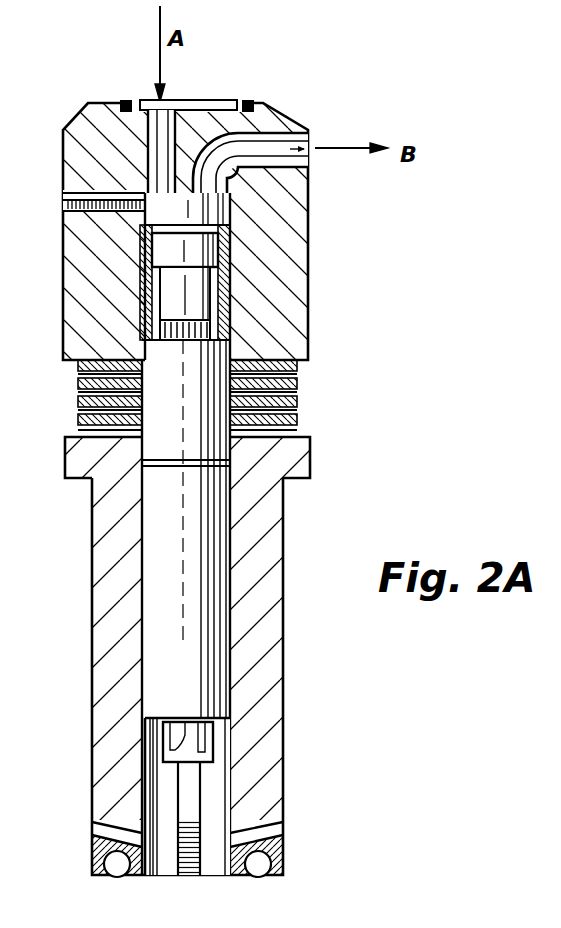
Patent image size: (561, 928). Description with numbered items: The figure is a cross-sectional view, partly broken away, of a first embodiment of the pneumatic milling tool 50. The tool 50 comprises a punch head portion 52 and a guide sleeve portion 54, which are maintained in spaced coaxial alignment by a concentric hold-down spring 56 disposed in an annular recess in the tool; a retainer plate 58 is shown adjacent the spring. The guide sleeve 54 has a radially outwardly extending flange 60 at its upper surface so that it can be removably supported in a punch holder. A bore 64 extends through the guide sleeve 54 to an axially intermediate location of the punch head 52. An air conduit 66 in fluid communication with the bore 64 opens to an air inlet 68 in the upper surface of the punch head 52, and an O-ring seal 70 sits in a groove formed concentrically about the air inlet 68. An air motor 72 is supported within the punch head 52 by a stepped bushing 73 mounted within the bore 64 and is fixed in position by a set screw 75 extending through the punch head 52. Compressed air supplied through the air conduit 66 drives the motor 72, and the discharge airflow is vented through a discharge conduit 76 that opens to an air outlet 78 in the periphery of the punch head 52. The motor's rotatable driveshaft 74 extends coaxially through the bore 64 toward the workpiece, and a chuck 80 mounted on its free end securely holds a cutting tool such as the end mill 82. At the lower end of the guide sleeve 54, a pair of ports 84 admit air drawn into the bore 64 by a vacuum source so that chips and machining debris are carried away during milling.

The pneumatic milling tool 50 is at (440, 158).
The punch head portion 52 is at (80, 295).
The guide sleeve portion 54 is at (104, 575).
The hold-down spring 56 is at (78, 394).
The seal retainer plate 58 is at (78, 432).
The flange 60 is at (72, 465).
The bore 64 is at (160, 775).
The air conduit 66 is at (160, 100).
The air inlet 68 is at (199, 105).
The O-ring seal 70 is at (249, 104).
The air motor 72 is at (222, 252).
The stepped bushing 73 is at (140, 258).
The driveshaft 74 is at (228, 338).
The set screw 75 is at (108, 200).
The discharge conduit 76 is at (306, 176).
The air outlet 78 is at (322, 140).
The chuck 80 is at (187, 716).
The end mill 82 is at (186, 793).
The ports 84 is at (283, 830).